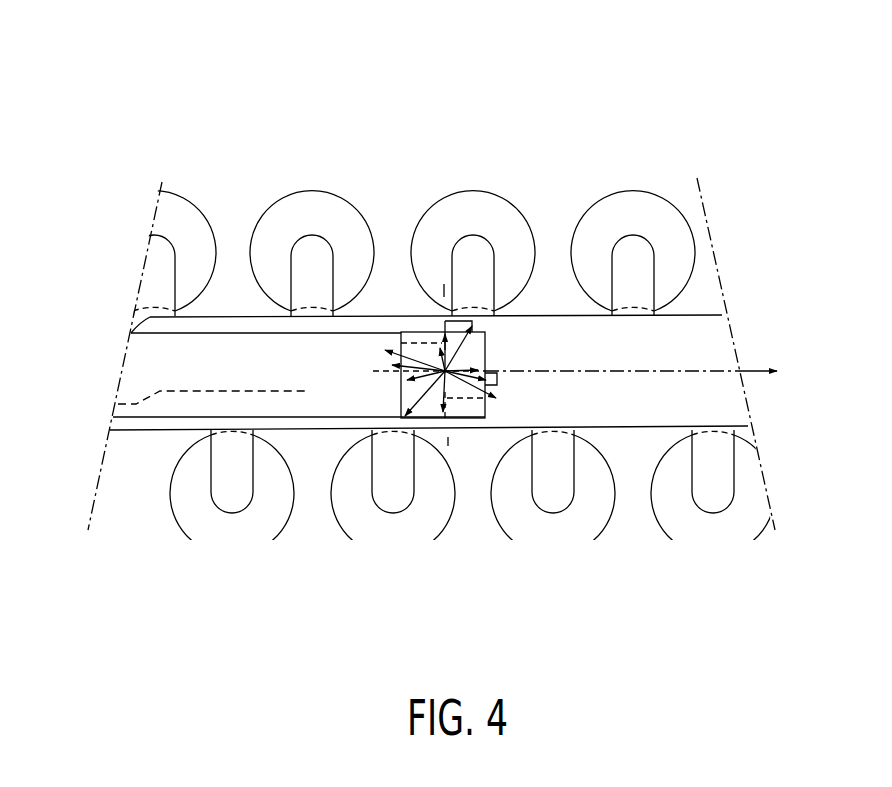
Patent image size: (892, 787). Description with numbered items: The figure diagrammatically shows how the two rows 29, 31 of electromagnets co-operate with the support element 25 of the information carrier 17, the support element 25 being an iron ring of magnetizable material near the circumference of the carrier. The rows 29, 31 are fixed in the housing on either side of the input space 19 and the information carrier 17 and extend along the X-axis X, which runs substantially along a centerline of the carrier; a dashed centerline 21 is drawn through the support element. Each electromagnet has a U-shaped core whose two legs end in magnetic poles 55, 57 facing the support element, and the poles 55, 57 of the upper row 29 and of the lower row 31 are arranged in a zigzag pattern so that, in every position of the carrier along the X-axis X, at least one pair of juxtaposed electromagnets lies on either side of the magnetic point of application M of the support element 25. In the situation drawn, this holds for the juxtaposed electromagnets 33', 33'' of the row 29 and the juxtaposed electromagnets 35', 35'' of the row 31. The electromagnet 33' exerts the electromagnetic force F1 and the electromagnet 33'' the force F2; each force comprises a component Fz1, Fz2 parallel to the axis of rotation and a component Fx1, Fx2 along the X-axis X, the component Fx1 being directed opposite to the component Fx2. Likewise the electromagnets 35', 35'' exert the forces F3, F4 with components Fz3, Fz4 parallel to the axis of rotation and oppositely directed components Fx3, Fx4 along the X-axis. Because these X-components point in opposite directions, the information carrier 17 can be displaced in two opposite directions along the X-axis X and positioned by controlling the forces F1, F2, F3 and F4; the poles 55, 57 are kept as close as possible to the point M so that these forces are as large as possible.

The information carrier 17 is at (135, 368).
The input space 19 is at (715, 331).
The center line of beam 21 is at (118, 404).
The support element 25 is at (401, 340).
The row of electromagnets 29 is at (568, 133).
The row of electromagnets 31 is at (660, 618).
The electromagnet 33' is at (312, 204).
The electromagnet 33'' is at (473, 204).
The electromagnet 35' is at (393, 543).
The electromagnet 35'' is at (553, 543).
The magnetic pole 55 is at (269, 395).
The magnetic pole 57 is at (150, 331).
The magnetic point of application M is at (440, 375).
The X-axis X is at (584, 371).
The electromagnetic force F1 is at (480, 343).
The electromagnetic force F2 is at (388, 352).
The electromagnetic force F3 is at (404, 416).
The electromagnetic force F4 is at (494, 400).
The force component along the X-axis Fx1 is at (482, 360).
The force component along the X-axis Fx2 is at (388, 352).
The force component along the X-axis Fx3 is at (395, 369).
The force component along the X-axis Fx4 is at (490, 385).
The force component parallel to the axis of rotation Fz1 is at (455, 360).
The force component parallel to the axis of rotation Fz2 is at (438, 346).
The force component parallel to the axis of rotation Fz3 is at (440, 378).
The force component parallel to the axis of rotation Fz4 is at (450, 414).